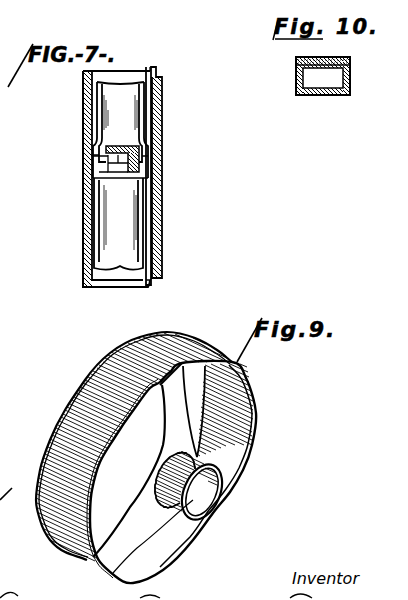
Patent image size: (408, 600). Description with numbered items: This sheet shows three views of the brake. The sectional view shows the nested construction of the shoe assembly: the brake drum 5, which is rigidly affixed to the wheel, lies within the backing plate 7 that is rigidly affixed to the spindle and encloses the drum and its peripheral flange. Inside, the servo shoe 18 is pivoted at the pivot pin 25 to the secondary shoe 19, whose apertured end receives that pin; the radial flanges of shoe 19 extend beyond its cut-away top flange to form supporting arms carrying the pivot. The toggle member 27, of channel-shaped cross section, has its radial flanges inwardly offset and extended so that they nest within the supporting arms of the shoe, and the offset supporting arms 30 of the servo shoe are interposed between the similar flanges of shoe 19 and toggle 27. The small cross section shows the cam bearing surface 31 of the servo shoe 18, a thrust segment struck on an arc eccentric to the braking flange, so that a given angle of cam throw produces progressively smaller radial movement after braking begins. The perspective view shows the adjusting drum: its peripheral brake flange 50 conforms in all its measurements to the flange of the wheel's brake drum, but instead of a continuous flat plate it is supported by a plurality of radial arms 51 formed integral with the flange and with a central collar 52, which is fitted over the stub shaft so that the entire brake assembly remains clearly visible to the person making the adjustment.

In FIG. 7, the brake drum 5 is at (84, 122).
In FIG. 7, the backing plate 7 is at (163, 107).
In FIG. 7, the servo shoe 18 is at (132, 98).
In FIG. 10, the servo shoe 18 is at (350, 78).
In FIG. 7, the secondary shoe 19 is at (125, 228).
In FIG. 7, the pivot pin 25 is at (118, 164).
In FIG. 7, the toggle member 27 is at (135, 150).
In FIG. 7, the supporting arms 30 is at (122, 162).
In FIG. 10, the cam bearing surface 31 is at (325, 96).
In FIG. 9, the peripheral brake flange 50 is at (116, 382).
In FIG. 9, the radial arms 51 is at (137, 535).
In FIG. 9, the central collar 52 is at (192, 462).